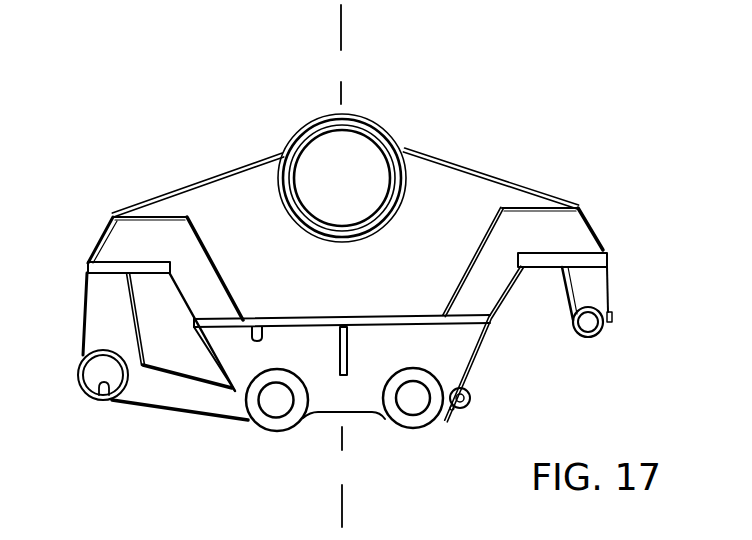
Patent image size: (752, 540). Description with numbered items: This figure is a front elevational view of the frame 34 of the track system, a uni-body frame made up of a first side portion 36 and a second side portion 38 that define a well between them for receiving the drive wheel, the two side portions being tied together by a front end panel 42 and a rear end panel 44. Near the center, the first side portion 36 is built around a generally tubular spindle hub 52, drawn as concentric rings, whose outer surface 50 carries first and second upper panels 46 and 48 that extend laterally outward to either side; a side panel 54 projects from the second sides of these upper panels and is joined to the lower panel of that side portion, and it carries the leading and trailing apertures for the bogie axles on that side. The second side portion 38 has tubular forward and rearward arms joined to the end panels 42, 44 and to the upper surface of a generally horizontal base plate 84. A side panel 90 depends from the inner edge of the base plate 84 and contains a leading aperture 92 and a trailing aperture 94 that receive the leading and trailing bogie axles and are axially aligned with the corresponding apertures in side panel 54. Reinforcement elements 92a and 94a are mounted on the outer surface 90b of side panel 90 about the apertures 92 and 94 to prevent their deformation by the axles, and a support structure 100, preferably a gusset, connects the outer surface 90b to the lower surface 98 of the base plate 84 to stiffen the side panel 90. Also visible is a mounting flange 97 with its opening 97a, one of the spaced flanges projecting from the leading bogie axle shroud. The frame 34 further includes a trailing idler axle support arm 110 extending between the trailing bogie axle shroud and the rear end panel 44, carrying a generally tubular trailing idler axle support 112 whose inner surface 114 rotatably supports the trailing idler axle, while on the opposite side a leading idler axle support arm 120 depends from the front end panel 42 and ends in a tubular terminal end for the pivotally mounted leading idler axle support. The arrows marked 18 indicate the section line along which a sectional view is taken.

The section line 18- 18 is at (341, 5).
The frame 34 is at (543, 356).
The first side portion 36 is at (465, 163).
The second side portion 38 is at (197, 227).
The front end panel 42 is at (586, 215).
The rear end panel 44 is at (100, 242).
The first upper panel 46 is at (238, 169).
The second upper panel 48 is at (516, 186).
The outer surface 50 is at (307, 128).
The spindle hub 52 is at (380, 125).
The side panel 54 is at (297, 261).
The base plate 84 is at (420, 318).
The side panel 90 is at (243, 372).
The outer surface 90b is at (297, 346).
The leading aperture 92 is at (421, 404).
The reinforcement element 92a is at (402, 417).
The trailing aperture 94 is at (267, 430).
The reinforcement element 94a is at (273, 408).
The second mounting flange 97 is at (465, 409).
The opening 97a is at (464, 393).
The lower surface 98 is at (266, 326).
The support structure 100 is at (348, 355).
The trailing idler axle support arm 110 is at (80, 358).
The trailing idler axle support 112 is at (87, 397).
The inner surface 114 is at (116, 404).
The leading idler axle support arm 120 is at (605, 278).